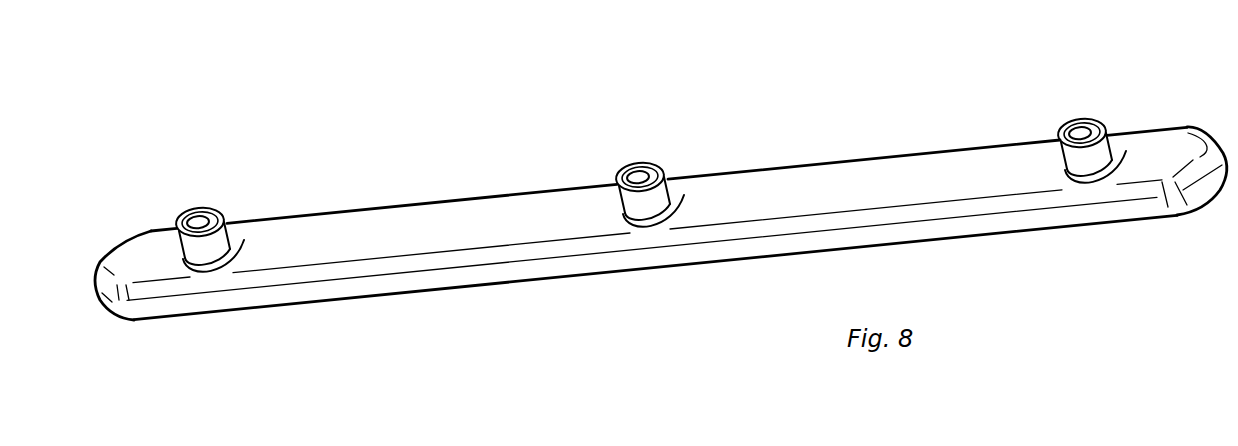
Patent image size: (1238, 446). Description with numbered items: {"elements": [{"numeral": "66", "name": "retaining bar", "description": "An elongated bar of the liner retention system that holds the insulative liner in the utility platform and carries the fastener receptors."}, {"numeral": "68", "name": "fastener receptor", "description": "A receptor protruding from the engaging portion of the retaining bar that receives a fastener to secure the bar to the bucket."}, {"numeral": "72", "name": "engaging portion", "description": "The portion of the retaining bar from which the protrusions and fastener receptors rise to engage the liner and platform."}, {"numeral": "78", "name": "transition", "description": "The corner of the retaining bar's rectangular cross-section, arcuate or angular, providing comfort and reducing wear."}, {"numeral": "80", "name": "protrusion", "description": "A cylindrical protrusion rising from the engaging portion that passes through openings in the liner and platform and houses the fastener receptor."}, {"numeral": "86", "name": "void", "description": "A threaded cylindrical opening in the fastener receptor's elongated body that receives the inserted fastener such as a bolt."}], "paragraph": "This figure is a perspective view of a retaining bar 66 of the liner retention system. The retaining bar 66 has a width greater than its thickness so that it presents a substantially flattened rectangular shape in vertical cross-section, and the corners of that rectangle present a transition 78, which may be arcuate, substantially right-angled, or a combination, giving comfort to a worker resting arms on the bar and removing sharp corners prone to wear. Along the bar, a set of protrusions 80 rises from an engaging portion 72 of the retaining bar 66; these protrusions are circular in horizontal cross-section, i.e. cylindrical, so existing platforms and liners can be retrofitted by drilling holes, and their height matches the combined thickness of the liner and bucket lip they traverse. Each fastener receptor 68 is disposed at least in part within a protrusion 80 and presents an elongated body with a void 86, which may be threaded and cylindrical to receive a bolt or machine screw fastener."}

The elongated bar 66 is at (877, 173).
The boss 68 is at (207, 210).
The top surface 72 is at (481, 184).
The front face 78 is at (158, 292).
The flange 80 is at (233, 225).
The nut 86 is at (187, 218).